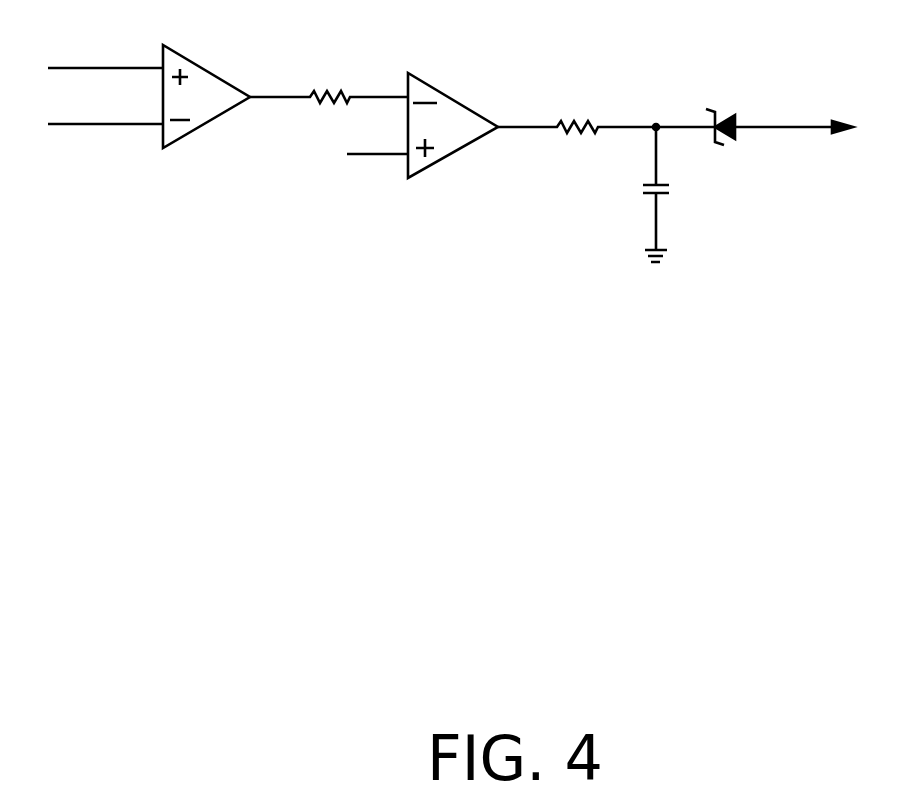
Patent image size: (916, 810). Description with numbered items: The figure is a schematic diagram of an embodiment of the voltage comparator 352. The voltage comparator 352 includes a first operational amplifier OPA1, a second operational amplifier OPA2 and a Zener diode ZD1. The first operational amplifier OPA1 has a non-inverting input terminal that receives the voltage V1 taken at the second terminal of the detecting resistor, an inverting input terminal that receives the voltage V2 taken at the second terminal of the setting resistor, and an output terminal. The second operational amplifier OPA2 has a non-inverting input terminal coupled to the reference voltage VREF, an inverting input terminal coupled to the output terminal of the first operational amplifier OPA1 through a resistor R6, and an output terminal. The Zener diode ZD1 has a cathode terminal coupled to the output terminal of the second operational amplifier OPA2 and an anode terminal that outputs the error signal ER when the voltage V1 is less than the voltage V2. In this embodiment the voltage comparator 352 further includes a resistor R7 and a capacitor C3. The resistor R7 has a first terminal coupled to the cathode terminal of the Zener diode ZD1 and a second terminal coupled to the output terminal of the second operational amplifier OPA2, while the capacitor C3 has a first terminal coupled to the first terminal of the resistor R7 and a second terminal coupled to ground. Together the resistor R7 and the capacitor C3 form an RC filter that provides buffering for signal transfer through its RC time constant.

The voltage comparator 352 is at (458, 211).
The first operational amplifier OPA1 is at (225, 91).
The second operational amplifier OPA2 is at (462, 116).
The resistor R6 is at (329, 77).
The resistor R7 is at (577, 106).
The capacitor C3 is at (635, 194).
The Zener diode ZD1 is at (709, 109).
The voltage at the second terminal of the detecting resistor V1 is at (85, 69).
The voltage at the second terminal of the setting resistor V2 is at (85, 125).
The reference voltage VREF is at (334, 152).
The error signal ER is at (803, 107).